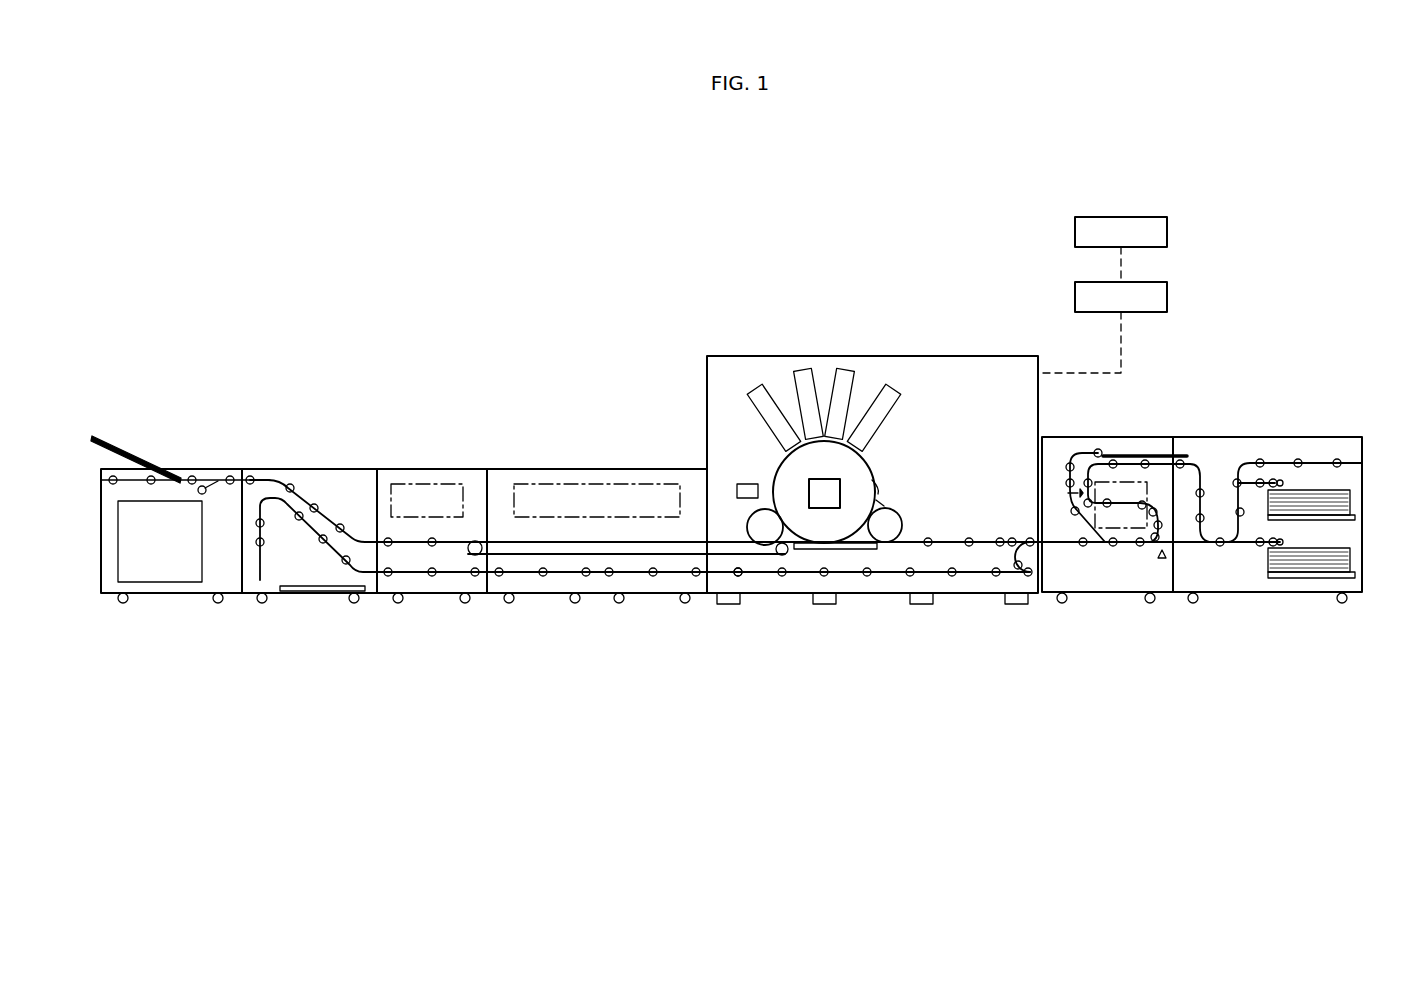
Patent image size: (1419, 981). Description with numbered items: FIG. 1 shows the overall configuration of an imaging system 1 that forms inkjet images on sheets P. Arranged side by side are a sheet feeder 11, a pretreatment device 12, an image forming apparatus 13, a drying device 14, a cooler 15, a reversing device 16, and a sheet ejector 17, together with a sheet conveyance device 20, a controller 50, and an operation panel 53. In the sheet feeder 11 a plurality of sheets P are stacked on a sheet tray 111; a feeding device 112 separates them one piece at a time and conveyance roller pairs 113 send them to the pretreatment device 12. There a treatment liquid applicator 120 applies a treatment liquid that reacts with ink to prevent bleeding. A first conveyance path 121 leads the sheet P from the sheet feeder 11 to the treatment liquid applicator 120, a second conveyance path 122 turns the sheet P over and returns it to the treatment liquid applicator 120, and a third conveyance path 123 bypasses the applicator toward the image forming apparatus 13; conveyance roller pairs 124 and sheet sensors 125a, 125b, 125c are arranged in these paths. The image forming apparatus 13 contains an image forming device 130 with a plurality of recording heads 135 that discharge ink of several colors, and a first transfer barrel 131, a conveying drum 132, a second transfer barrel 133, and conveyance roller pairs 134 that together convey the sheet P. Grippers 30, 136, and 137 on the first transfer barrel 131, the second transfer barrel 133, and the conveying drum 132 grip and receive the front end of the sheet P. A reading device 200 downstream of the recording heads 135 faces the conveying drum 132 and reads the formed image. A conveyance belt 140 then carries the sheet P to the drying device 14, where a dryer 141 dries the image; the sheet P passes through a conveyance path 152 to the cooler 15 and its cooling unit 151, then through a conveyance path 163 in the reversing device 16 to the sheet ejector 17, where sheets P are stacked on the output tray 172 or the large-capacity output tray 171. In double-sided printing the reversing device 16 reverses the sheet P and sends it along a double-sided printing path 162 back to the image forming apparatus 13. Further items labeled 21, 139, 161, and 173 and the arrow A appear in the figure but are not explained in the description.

The imaging system 1 is at (1276, 261).
The sheet feeder 11 is at (1333, 437).
The pretreatment device 12 is at (1148, 437).
The image forming apparatus 13 is at (1005, 356).
The drying device 14 is at (535, 468).
The cooler 15 is at (432, 468).
The reversing device 16 is at (283, 468).
The sheet ejector 17 is at (190, 468).
The sheet conveyance device 20 is at (962, 466).
The conveying path 21 is at (1000, 541).
The gripper 30 is at (895, 512).
The controller 50 is at (1167, 297).
The operation panel 53 is at (1167, 232).
The sheet tray 111 is at (1340, 565).
The feeding device 112 is at (1273, 479).
The conveyance roller pairs 113 is at (1208, 478).
The treatment liquid applicator 120 is at (1103, 530).
The first conveyance path 121 is at (1137, 454).
The second conveyance path 122 is at (1098, 449).
The third conveyance path 123 is at (1150, 530).
The conveyance roller pairs 124 is at (1070, 463).
The sheet sensor 125a is at (1062, 500).
The sheet sensor 125b is at (1068, 493).
The sheet sensor 125c is at (1162, 560).
The image forming device 130 is at (853, 488).
The first transfer barrel 131 is at (898, 583).
The conveying drum 132 is at (822, 532).
The second transfer barrel 133 is at (765, 546).
The conveyance roller pairs 134 is at (1020, 562).
The recording heads 135 is at (802, 372).
The gripper 136 is at (880, 486).
The gripper 137 is at (733, 576).
The transfer nip 139 is at (880, 503).
The conveyance belt 140 is at (640, 556).
The dryer 141 is at (633, 484).
The cooling unit 151 is at (404, 484).
The conveyance path 152 is at (432, 540).
The reversing conveyance path 161 is at (337, 500).
The double-sided printing path 162 is at (330, 548).
The conveyance path 163 is at (318, 500).
The large-capacity output tray 171 is at (165, 593).
The output tray 172 is at (123, 452).
The ejection roller 173 is at (229, 480).
The reading device 200 is at (747, 490).
The sheet conveying direction A is at (887, 552).
The sheet P is at (1292, 574).